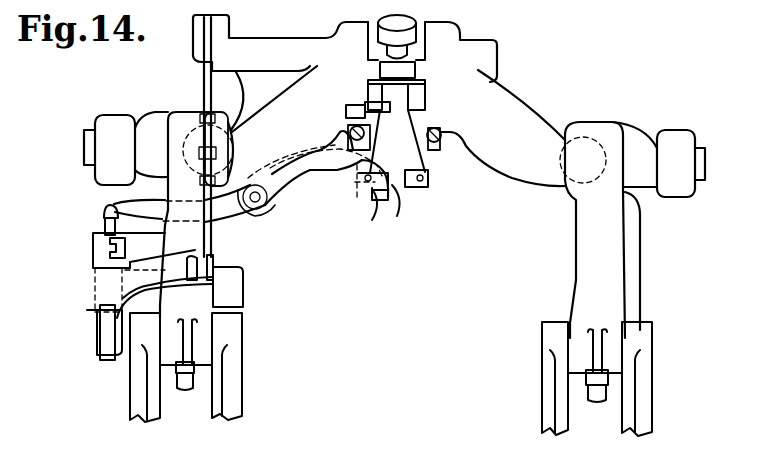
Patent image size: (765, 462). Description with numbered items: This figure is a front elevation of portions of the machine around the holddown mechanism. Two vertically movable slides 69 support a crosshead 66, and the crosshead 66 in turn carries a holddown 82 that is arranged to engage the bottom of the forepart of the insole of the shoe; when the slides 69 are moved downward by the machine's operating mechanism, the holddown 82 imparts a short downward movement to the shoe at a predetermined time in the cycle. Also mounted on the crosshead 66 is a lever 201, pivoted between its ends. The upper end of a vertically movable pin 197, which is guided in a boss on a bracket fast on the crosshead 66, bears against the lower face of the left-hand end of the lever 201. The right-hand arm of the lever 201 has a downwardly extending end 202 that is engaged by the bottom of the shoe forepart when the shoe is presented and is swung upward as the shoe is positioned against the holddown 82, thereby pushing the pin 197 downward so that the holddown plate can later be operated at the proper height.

The crosshead 66 is at (508, 160).
The vertically movable slides 69 is at (137, 393).
The holddown 82 is at (396, 188).
The pin 197 is at (106, 222).
The lever 201 is at (238, 212).
The downwardly extending end 202 is at (377, 205).